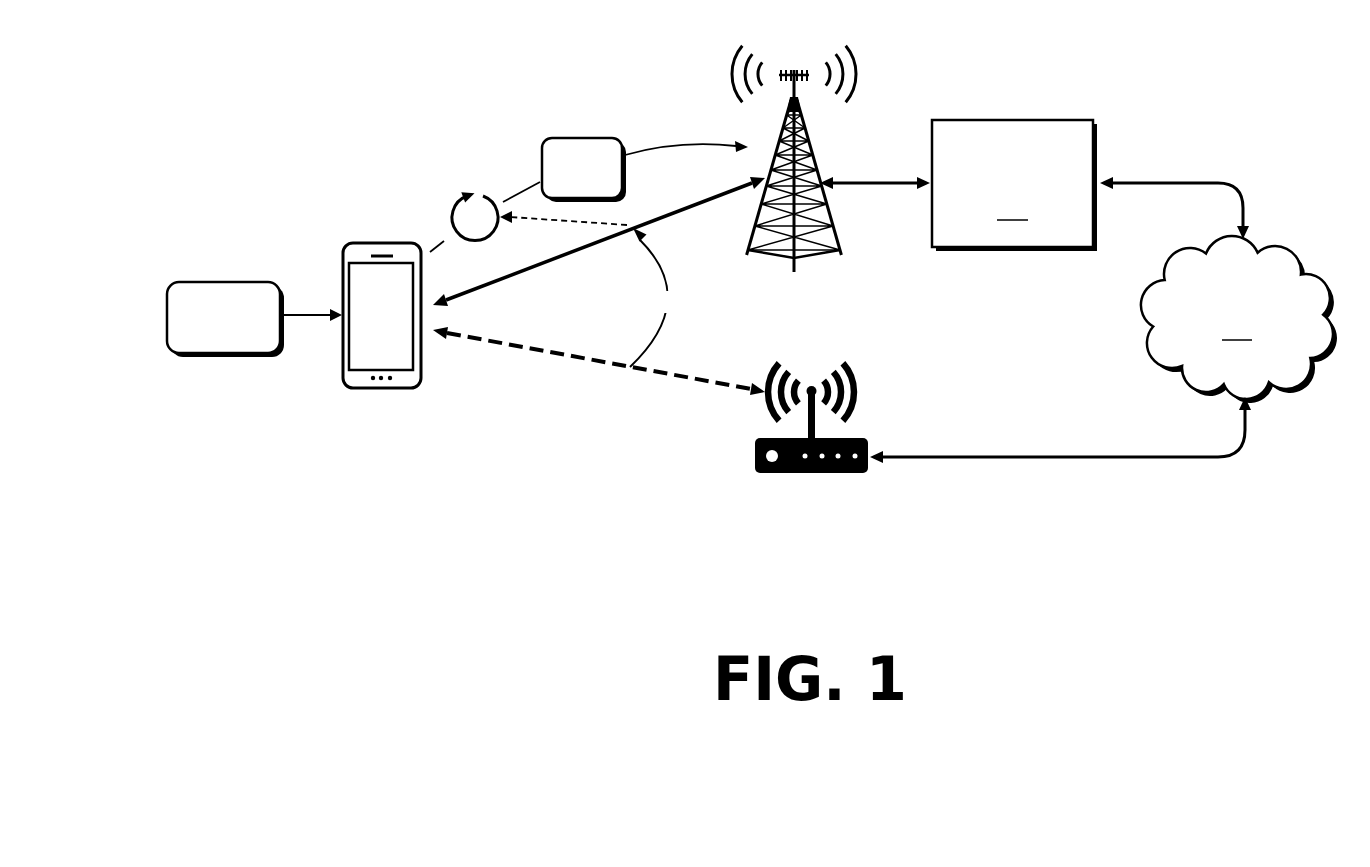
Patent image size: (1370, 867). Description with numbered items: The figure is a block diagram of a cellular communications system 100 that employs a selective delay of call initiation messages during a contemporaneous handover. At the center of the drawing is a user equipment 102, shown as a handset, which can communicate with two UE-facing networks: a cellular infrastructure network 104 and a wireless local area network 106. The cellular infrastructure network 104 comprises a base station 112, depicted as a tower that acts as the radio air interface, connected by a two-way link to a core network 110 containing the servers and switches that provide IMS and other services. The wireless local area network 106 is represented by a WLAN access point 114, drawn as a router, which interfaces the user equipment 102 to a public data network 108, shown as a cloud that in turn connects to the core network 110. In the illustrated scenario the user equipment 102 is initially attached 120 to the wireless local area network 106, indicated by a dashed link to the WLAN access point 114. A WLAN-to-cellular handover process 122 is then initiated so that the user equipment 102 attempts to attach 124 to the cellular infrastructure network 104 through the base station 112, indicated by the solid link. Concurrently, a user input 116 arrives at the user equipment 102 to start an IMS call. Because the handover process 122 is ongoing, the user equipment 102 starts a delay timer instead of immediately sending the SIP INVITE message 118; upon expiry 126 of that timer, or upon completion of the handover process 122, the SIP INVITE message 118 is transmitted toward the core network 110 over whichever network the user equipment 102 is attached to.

The cellular communications system 100 is at (640, 108).
The user equipment 102 is at (401, 330).
The cellular infrastructure network 104 is at (897, 88).
The wireless local area network 106 is at (908, 521).
The public data network 108 is at (1103, 320).
The core network 110 is at (958, 185).
The base station 112 is at (747, 250).
The WLAN access point 114 is at (797, 473).
The user input 116 is at (220, 280).
The SIP INVITE message 118 is at (543, 147).
The attachment to WLAN 120 is at (565, 358).
The handover process 122 is at (657, 345).
The attachment to cellular infrastructure network 124 is at (567, 257).
The expiry of delay timer 126 is at (448, 220).